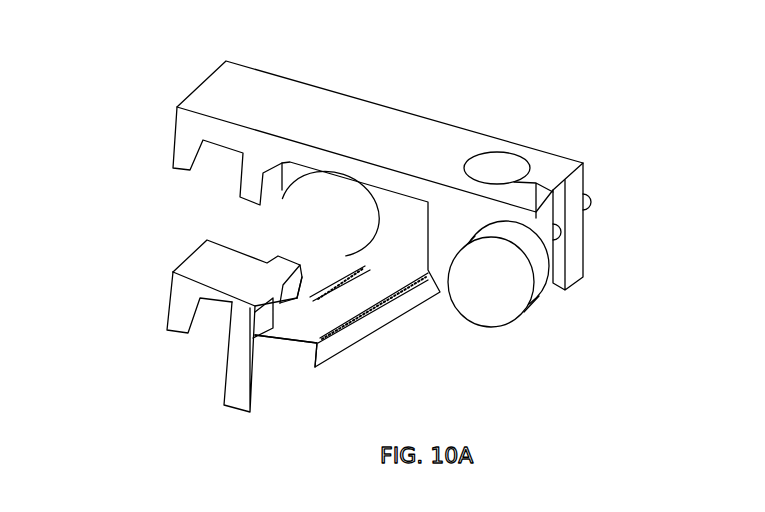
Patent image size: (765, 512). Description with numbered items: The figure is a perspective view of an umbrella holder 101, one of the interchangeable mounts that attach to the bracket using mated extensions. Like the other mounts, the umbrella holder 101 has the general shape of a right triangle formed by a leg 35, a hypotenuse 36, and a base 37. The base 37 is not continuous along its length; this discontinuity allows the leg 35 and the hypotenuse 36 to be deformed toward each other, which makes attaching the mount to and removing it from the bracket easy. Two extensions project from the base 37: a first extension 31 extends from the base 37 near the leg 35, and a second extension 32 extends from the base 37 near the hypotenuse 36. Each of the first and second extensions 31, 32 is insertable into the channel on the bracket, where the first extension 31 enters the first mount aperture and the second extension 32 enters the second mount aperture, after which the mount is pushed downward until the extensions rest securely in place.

The base 37 is at (315, 255).
The umbrella holder 101 is at (371, 199).
The leg 35 is at (345, 93).
The first extension 31 is at (183, 172).
The second extension 32 is at (168, 333).
The hypotenuse 36 is at (268, 395).